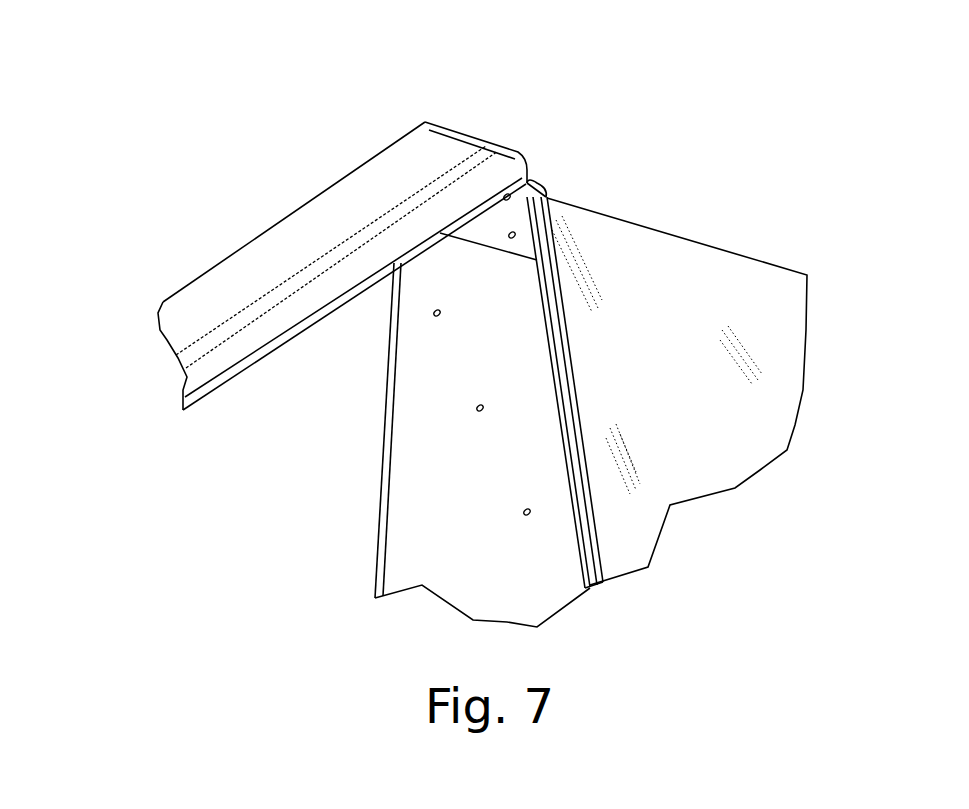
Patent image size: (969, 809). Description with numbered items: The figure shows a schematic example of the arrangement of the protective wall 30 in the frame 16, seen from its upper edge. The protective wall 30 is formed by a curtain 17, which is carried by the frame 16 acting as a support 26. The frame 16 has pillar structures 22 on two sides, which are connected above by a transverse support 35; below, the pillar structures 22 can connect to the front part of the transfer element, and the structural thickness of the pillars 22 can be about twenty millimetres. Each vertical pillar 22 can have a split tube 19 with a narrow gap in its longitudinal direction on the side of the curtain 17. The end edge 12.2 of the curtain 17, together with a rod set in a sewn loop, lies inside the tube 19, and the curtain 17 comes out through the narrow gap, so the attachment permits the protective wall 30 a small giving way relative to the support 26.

The frame 16 is at (296, 247).
The transverse support 35 is at (370, 183).
The support 26 is at (503, 129).
The second end 12.2 is at (627, 301).
The split tube 19 is at (593, 510).
The protective wall 30 is at (701, 348).
The curtain 17 is at (680, 197).
The pillar structures 22 is at (391, 474).